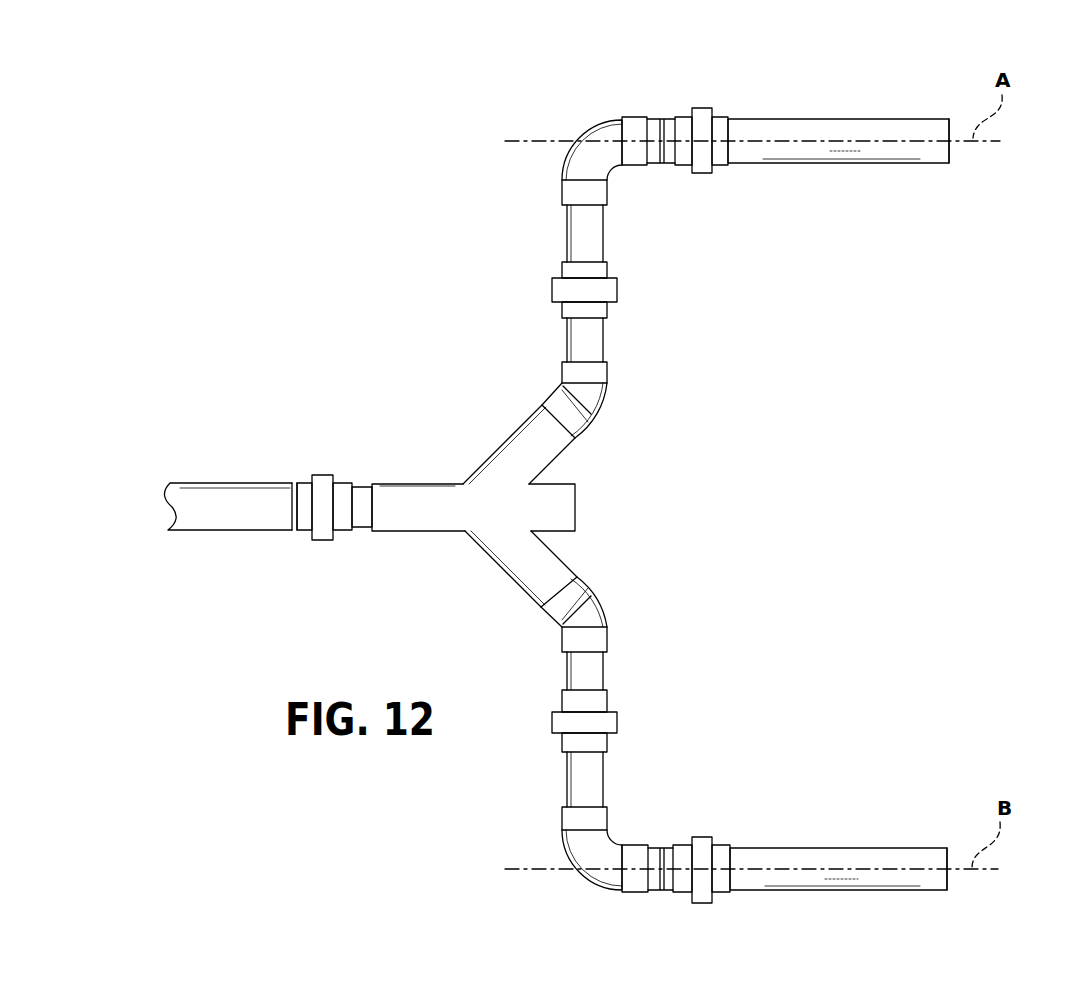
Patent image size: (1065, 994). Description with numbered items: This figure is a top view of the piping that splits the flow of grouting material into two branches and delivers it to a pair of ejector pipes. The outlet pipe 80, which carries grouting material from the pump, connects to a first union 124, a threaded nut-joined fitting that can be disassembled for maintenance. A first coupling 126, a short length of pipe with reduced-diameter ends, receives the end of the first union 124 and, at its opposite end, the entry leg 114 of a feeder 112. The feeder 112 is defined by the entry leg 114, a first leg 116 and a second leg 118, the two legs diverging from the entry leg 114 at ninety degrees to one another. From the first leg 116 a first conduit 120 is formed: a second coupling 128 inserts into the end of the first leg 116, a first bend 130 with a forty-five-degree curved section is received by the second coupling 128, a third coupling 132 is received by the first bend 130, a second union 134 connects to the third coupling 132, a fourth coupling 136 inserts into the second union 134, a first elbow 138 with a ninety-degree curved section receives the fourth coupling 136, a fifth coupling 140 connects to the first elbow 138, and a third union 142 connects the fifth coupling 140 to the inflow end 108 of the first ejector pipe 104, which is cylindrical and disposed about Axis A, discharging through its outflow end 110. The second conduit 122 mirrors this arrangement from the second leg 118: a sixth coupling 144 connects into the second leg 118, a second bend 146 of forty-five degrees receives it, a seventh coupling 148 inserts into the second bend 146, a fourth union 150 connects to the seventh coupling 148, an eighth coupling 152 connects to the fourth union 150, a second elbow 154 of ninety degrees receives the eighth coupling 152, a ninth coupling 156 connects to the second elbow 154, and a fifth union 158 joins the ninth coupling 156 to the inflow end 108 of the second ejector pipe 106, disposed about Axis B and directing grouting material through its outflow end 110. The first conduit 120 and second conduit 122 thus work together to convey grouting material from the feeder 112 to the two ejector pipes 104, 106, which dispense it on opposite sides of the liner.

The outlet pipe 80 is at (225, 503).
The first ejector pipe 104 is at (842, 129).
The second ejector pipe 106 is at (840, 858).
The inflow end 108 is at (730, 133).
The outflow end 110 is at (950, 135).
The feeder 112 is at (474, 500).
The entry leg 114 is at (423, 503).
The first leg 116 is at (522, 457).
The second leg 118 is at (500, 553).
The first conduit 120 is at (382, 222).
The second conduit 122 is at (335, 640).
The first union 124 is at (332, 477).
The first coupling 126 is at (360, 493).
The second coupling 128 is at (573, 432).
The first bend 130 is at (597, 397).
The third coupling 132 is at (573, 343).
The second union 134 is at (570, 290).
The fourth coupling 136 is at (578, 238).
The first elbow 138 is at (595, 152).
The fifth coupling 140 is at (653, 133).
The third union 142 is at (702, 117).
The sixth coupling 144 is at (558, 603).
The second bend 146 is at (588, 613).
The seventh coupling 148 is at (572, 682).
The fourth union 150 is at (567, 722).
The eighth coupling 152 is at (573, 780).
The second elbow 154 is at (592, 858).
The ninth coupling 156 is at (668, 885).
The fifth union 158 is at (700, 848).